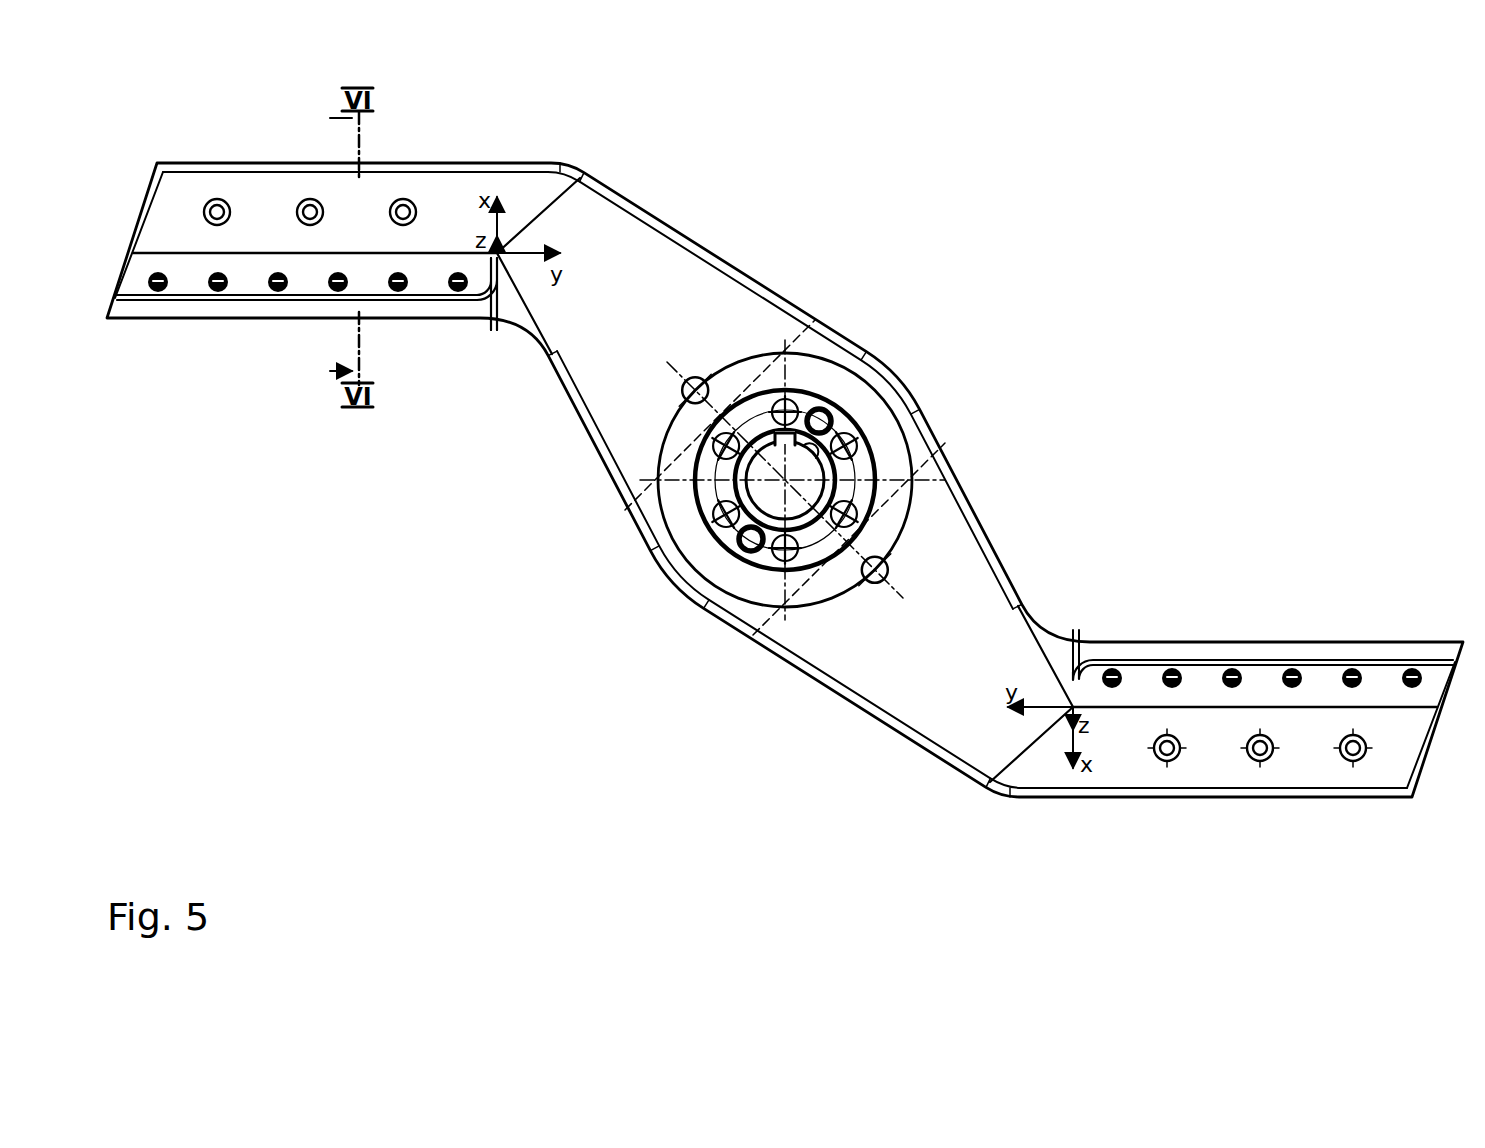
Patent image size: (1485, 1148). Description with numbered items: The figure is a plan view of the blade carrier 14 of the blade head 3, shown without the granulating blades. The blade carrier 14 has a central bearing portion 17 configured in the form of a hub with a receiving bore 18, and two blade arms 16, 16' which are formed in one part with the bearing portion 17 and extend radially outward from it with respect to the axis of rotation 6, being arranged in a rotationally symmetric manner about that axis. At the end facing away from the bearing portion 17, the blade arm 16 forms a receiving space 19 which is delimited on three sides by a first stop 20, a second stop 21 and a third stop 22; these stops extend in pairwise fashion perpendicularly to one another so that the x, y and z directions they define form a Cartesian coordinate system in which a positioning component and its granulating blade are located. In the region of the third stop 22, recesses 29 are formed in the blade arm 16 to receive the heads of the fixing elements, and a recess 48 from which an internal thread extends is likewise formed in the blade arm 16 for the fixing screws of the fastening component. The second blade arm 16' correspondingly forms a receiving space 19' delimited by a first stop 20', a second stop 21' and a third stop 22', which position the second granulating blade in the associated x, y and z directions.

The blade head 3 is at (940, 176).
The axis of rotation 6 is at (790, 483).
The blade carrier 14 is at (702, 226).
The blade arm 16 is at (590, 218).
The blade arm 16' is at (977, 625).
The bearing portion 17 is at (893, 392).
The receiving bore 18 is at (835, 463).
The receiving space 19 is at (305, 270).
The receiving space 19' is at (1142, 680).
The first stop 20 is at (306, 190).
The first stop 20' is at (1264, 676).
The second stop 21 is at (490, 334).
The second stop 21' is at (1076, 618).
The third stop 22 is at (307, 334).
The third stop 22' is at (1263, 623).
The recesses 29 is at (458, 292).
The recess 48 is at (309, 204).